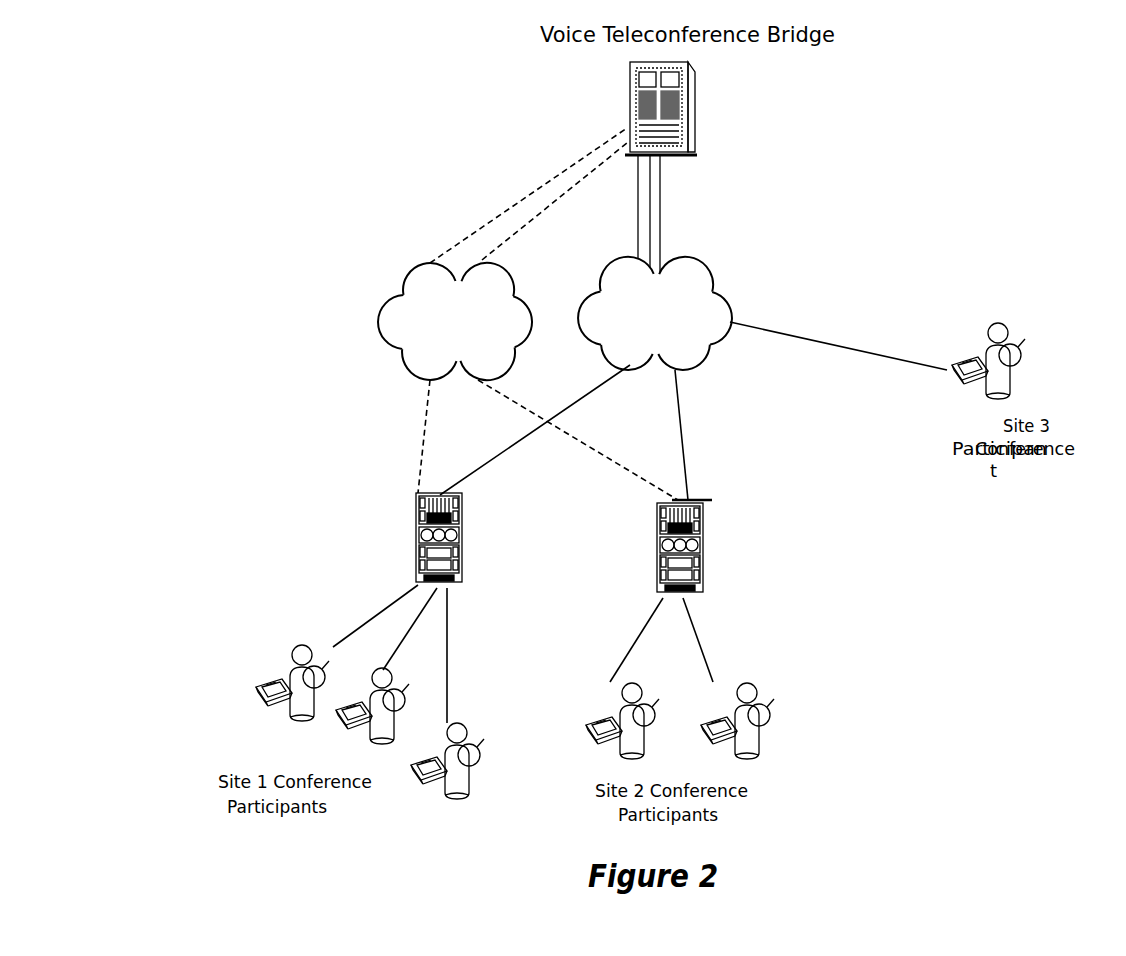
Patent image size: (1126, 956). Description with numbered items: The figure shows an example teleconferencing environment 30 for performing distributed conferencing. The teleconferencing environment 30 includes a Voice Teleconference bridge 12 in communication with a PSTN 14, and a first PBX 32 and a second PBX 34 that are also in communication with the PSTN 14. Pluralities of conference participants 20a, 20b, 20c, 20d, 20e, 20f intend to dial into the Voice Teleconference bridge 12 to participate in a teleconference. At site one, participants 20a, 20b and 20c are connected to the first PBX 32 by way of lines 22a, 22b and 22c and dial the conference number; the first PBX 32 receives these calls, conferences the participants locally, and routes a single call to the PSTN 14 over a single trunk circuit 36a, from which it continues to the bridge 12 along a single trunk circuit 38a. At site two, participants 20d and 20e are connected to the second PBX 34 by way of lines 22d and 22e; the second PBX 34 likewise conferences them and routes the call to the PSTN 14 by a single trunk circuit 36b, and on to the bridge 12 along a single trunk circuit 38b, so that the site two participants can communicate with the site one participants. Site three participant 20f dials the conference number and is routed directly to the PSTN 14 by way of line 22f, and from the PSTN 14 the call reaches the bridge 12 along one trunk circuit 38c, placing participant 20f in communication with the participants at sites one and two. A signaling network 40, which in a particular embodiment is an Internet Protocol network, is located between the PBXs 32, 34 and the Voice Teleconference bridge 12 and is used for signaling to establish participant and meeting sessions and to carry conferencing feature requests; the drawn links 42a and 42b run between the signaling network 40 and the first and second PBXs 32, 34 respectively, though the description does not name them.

The teleconferencing environment 30 is at (318, 68).
The Voice Teleconference bridge 12 is at (708, 106).
The PSTN 14 is at (684, 293).
The signaling network 40 is at (480, 254).
The trunk circuit 38a is at (716, 202).
The trunk circuit 38b is at (727, 211).
The trunk circuit 38c is at (737, 213).
The trunk circuit 36a is at (535, 430).
The trunk circuit 36b is at (735, 435).
The signaling link to PBX 32 42a is at (382, 436).
The signaling link to PBX 34 42b is at (578, 440).
The first PBX 32 is at (402, 530).
The second PBX 34 is at (698, 536).
The line 22a is at (365, 607).
The line 22b is at (361, 629).
The line 22c is at (496, 655).
The line 22d is at (608, 639).
The line 22e is at (745, 636).
The line 22f is at (838, 329).
The conference participant 20a is at (254, 700).
The conference participant 20b is at (336, 720).
The conference participant 20c is at (417, 779).
The conference participant 20d is at (582, 737).
The conference participant 20e is at (768, 737).
The conference participant 20f is at (1032, 345).